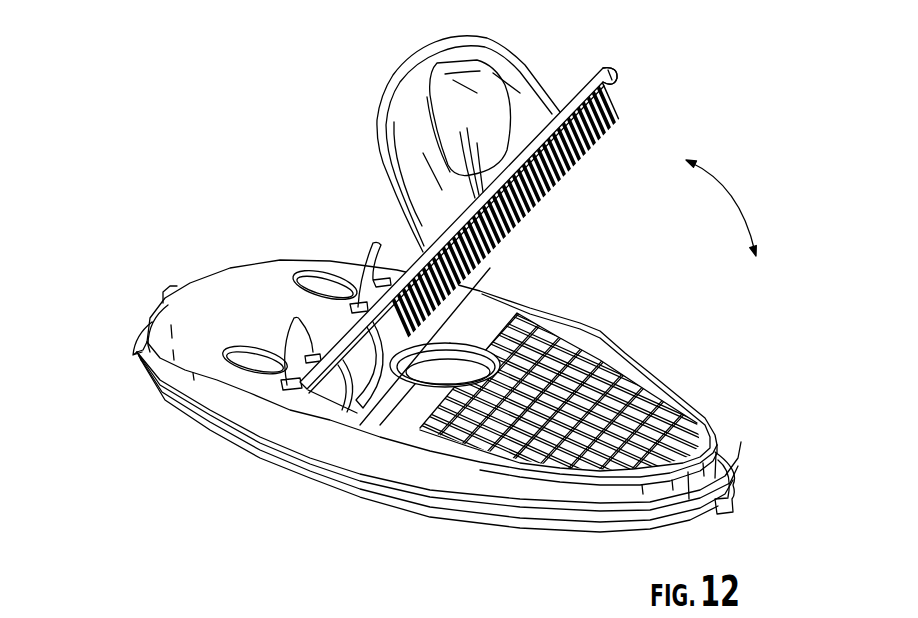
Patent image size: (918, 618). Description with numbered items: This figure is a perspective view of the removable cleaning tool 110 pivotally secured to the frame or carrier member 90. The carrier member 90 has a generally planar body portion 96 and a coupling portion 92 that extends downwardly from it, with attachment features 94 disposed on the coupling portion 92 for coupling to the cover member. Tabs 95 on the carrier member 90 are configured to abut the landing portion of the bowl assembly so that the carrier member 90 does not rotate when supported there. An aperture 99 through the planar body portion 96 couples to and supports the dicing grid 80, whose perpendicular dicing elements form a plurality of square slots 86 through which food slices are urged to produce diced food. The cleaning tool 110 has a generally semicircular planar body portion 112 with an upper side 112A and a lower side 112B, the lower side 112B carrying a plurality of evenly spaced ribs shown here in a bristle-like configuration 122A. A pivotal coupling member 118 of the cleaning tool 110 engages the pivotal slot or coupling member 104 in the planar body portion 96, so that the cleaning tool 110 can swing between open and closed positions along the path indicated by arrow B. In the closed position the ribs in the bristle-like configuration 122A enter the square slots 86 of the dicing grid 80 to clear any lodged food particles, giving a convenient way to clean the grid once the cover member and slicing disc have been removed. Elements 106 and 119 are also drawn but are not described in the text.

The dicing grid 80 is at (681, 397).
The square slots 86 is at (688, 427).
The carrier member 90 is at (441, 359).
The coupling portion 92 is at (220, 395).
The attachment features 94 is at (165, 290).
The tabs 95 is at (145, 332).
The planar body portion 96 is at (253, 274).
The aperture 99 is at (620, 338).
The coupling member 104 is at (314, 345).
The retaining tab 106 is at (385, 262).
The cleaning tool 110 is at (504, 196).
The body portion 112 is at (504, 198).
The upper side 112A is at (600, 60).
The lower side 112B is at (618, 79).
The pivotal coupling member 118 is at (347, 387).
The handle 119 is at (427, 57).
The bristle-like configuration 122A is at (602, 162).
The arrow B is at (733, 191).